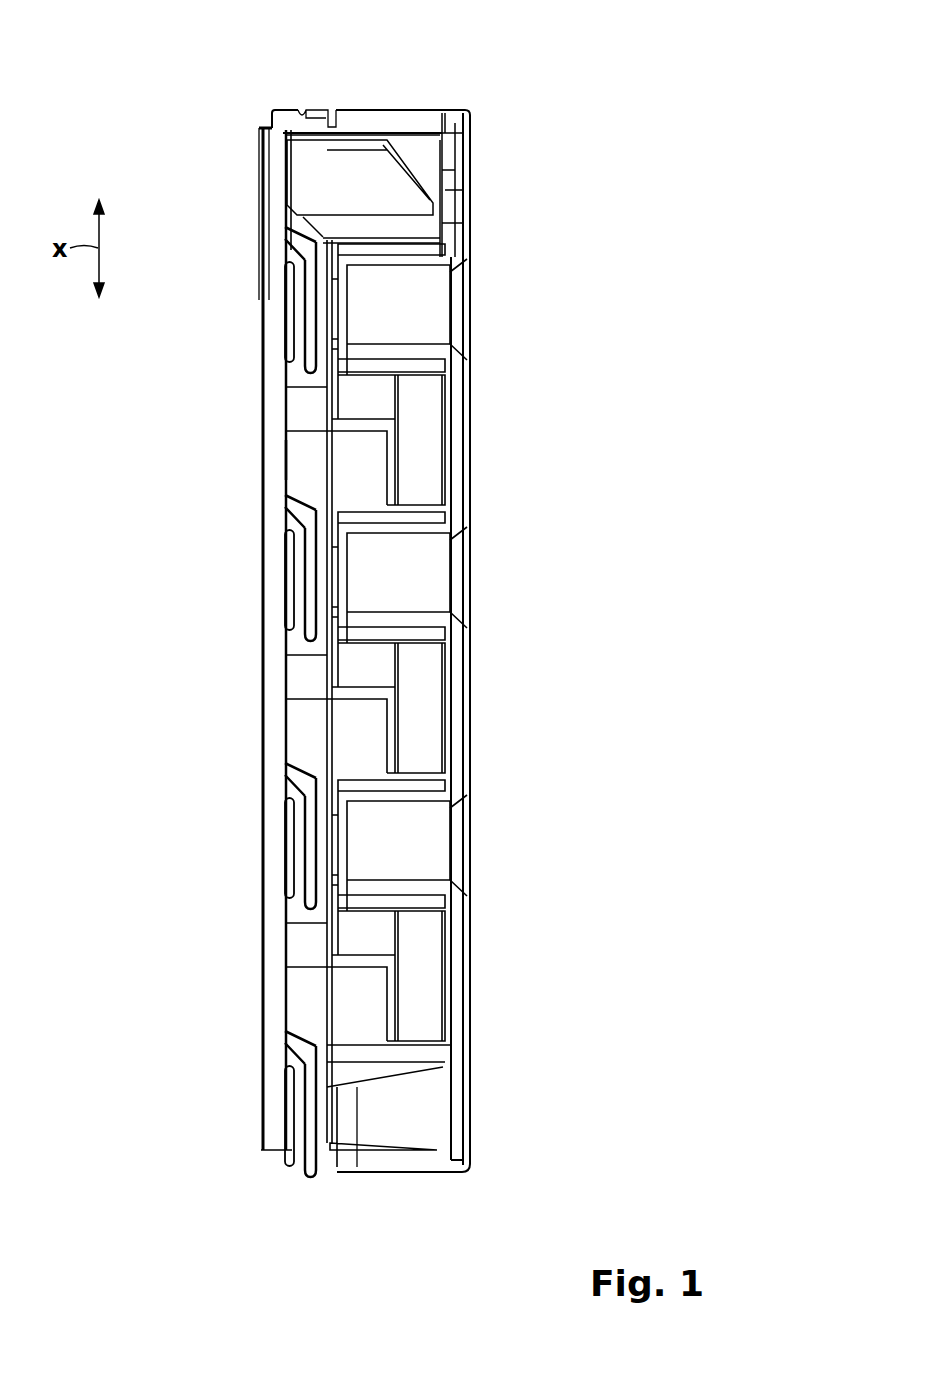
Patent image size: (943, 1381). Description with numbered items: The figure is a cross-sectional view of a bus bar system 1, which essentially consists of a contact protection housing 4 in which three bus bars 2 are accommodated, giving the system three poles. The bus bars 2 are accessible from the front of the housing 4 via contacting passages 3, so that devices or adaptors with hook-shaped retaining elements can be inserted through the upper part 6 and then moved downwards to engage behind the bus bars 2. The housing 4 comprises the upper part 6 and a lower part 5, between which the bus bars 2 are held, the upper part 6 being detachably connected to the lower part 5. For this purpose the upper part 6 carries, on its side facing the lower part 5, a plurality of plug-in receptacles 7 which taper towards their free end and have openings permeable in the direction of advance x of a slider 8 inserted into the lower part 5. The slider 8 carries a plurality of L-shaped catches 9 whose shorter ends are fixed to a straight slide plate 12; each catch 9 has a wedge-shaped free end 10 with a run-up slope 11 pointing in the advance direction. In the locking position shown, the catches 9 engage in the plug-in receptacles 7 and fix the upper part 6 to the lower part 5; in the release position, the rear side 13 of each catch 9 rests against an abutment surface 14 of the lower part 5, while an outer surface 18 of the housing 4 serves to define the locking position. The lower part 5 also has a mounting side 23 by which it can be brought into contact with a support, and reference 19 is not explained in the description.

The bus bar system 1 is at (563, 62).
The bus bars 2 is at (430, 396).
The contacting passages 3 is at (455, 300).
The contact protection housing 4 is at (368, 118).
The lower part 5 is at (290, 1160).
The upper part 6 is at (456, 429).
The plug-in receptacles 7 is at (310, 326).
The slider 8 is at (282, 460).
The catches 9 is at (316, 384).
The free end 10 is at (302, 358).
The run-up slope 11 is at (290, 290).
The slide plate 12 is at (282, 1001).
The rear side 13 is at (320, 482).
The abutment surface 14 is at (310, 442).
The outer surface 18 is at (262, 128).
The latch 19 is at (316, 112).
The mounting side 23 is at (258, 158).